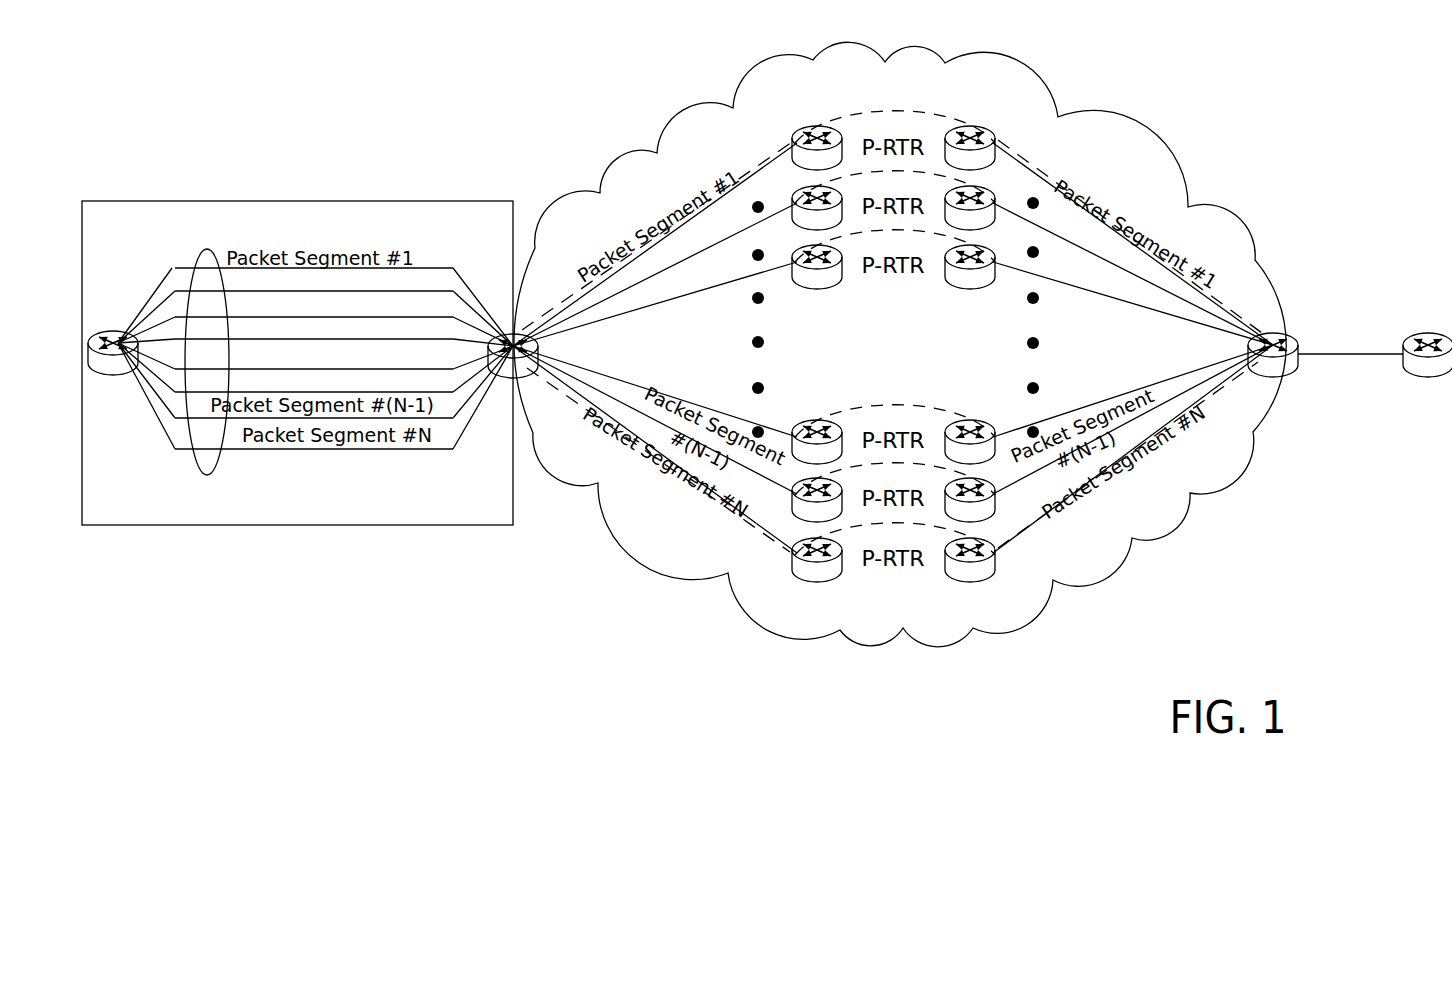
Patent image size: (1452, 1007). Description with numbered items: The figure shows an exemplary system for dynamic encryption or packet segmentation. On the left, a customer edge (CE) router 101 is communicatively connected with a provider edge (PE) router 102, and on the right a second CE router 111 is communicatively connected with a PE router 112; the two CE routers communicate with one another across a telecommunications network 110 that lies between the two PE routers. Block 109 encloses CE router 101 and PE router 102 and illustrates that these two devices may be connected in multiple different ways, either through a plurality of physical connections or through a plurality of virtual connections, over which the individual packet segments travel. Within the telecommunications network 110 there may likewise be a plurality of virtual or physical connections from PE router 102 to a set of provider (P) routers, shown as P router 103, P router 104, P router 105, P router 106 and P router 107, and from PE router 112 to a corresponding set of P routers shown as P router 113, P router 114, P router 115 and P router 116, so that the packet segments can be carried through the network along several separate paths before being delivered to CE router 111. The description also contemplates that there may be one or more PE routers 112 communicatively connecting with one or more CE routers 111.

The customer edge router 101 is at (122, 330).
The provider edge router 102 is at (504, 333).
The P router 103 is at (805, 128).
The P router 104 is at (800, 190).
The P router 105 is at (800, 456).
The P router 106 is at (800, 512).
The P router 107 is at (815, 572).
The block 109 is at (188, 201).
The telecommunications network 110 is at (1080, 117).
The customer edge router 111 is at (1410, 375).
The provider edge router 112 is at (1290, 375).
The P router 113 is at (975, 128).
The P router 114 is at (985, 190).
The P router 115 is at (995, 458).
The P router 116 is at (952, 512).